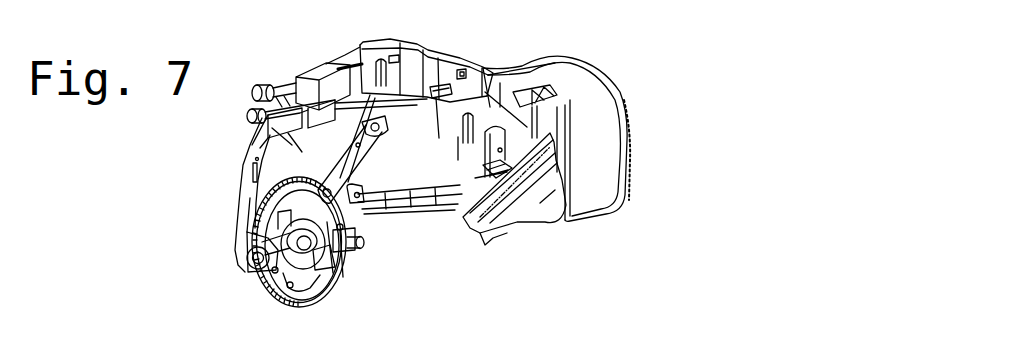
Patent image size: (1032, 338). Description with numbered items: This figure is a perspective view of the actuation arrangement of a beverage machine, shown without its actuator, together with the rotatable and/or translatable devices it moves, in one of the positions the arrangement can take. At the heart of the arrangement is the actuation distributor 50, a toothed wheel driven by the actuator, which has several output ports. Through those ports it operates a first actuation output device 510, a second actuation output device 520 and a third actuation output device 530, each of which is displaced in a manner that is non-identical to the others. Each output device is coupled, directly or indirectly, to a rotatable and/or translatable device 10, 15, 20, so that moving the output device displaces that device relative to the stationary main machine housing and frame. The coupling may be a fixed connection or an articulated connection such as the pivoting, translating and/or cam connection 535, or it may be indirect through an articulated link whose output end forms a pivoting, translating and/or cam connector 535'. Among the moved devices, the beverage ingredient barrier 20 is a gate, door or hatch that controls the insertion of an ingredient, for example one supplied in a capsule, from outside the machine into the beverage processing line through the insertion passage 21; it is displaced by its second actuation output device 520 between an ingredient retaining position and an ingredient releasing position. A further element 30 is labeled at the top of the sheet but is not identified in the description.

The rotatable and/or translatable device 10 is at (592, 153).
The rotatable and/or translatable device 15 is at (497, 232).
The beverage ingredient barrier 20 is at (435, 48).
The insertion passage 21 is at (507, 84).
The frame 30 is at (174, 4).
The actuation distributor 50 is at (260, 293).
The first actuation output device 510 is at (350, 173).
The second actuation output device 520 is at (248, 193).
The third actuation output device 530 is at (347, 228).
The cam connection 535 is at (404, 186).
The cam connector 535' is at (445, 158).